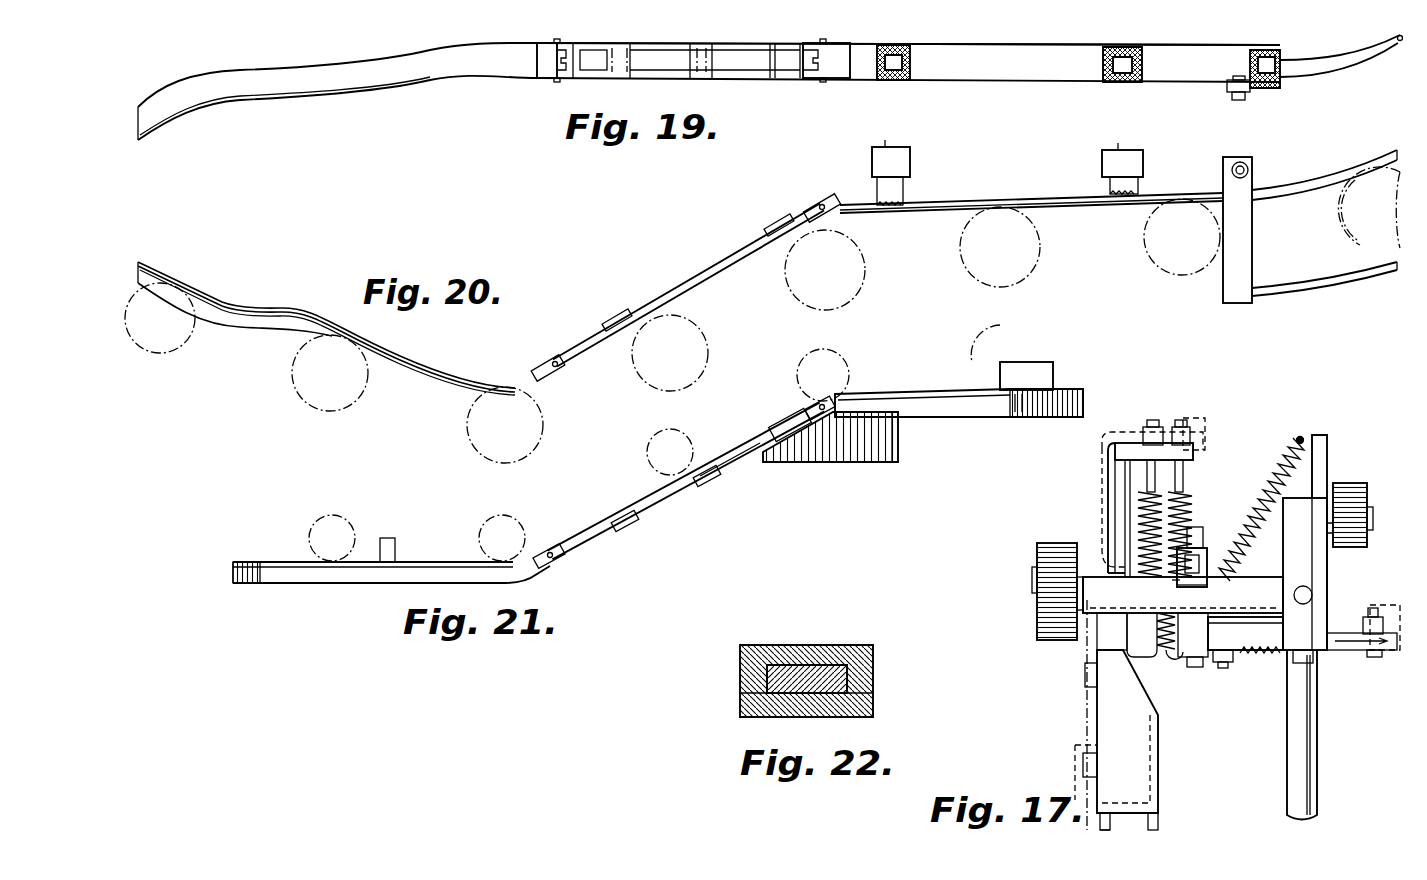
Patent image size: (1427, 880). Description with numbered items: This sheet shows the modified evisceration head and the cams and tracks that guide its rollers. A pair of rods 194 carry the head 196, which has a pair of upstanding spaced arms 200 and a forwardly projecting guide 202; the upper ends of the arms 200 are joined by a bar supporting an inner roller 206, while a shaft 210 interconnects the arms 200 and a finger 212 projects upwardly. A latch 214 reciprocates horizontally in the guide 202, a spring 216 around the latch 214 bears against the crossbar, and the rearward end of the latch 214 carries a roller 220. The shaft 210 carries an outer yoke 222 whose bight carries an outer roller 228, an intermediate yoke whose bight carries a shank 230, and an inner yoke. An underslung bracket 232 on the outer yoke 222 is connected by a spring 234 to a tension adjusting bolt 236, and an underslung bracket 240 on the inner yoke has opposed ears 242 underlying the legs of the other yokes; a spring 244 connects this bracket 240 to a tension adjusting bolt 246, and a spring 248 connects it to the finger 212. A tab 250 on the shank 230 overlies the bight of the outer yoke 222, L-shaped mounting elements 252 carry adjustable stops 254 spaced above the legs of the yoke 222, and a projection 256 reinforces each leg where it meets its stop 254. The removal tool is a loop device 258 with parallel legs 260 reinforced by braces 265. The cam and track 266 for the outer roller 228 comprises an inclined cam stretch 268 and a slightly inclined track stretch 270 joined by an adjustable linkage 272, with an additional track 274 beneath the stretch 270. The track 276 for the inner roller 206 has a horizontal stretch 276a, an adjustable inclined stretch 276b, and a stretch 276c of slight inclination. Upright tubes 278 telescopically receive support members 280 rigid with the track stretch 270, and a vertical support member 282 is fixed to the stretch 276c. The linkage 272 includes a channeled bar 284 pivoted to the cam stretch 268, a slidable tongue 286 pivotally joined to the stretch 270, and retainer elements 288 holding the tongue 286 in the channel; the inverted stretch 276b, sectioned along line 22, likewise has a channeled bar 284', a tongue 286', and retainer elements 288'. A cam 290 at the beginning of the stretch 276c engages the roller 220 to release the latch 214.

In FIG. 17, the rods 194 is at (1308, 722).
In FIG. 17, the head 196 is at (1335, 560).
In FIG. 17, the arms 200 is at (1288, 567).
In FIG. 17, the guide 202 is at (1237, 653).
In FIG. 21, the roller 206 is at (345, 515).
In FIG. 17, the roller 206 is at (1358, 500).
In FIG. 17, the shaft 210 is at (1312, 594).
In FIG. 17, the finger 212 is at (1328, 455).
In FIG. 17, the latch 214 is at (1220, 668).
In FIG. 17, the spring 216 is at (1268, 655).
In FIG. 17, the roller 220 is at (1368, 628).
In FIG. 17, the outer yoke 222 is at (1085, 640).
In FIG. 20, the roller 228 is at (466, 427).
In FIG. 17, the roller 228 is at (1042, 560).
In FIG. 17, the shank 230 is at (1110, 495).
In FIG. 17, the bracket 232 is at (1140, 672).
In FIG. 17, the spring 234 is at (1143, 487).
In FIG. 17, the tension adjusting bolt 236 is at (1149, 420).
In FIG. 17, the bracket 240 is at (1176, 662).
In FIG. 17, the ears 242 is at (1226, 632).
In FIG. 17, the spring 244 is at (1187, 497).
In FIG. 17, the tension adjusting bolt 246 is at (1186, 420).
In FIG. 17, the spring 248 is at (1293, 455).
In FIG. 17, the tab 250 is at (1070, 535).
In FIG. 17, the L-shaped mounting elements 252 is at (1177, 578).
In FIG. 17, the stops 254 is at (1205, 550).
In FIG. 17, the projection 256 is at (1205, 587).
In FIG. 17, the loop device 258 is at (1075, 774).
In FIG. 17, the legs 260 is at (1102, 826).
In FIG. 17, the braces 265 is at (1158, 818).
In FIG. 19, the cam and track 266 is at (472, 42).
In FIG. 20, the cam and track 266 is at (246, 300).
In FIG. 19, the cam stretch 268 is at (425, 79).
In FIG. 20, the cam stretch 268 is at (327, 308).
In FIG. 19, the track stretch 270 is at (1020, 54).
In FIG. 20, the track stretch 270 is at (1015, 200).
In FIG. 19, the adjustable linkage 272 is at (660, 43).
In FIG. 20, the adjustable linkage 272 is at (655, 294).
In FIG. 20, the track 274 is at (1297, 288).
In FIG. 21, the track 276 is at (422, 558).
In FIG. 21, the horizontal stretch 276a is at (280, 551).
In FIG. 21, the inclined stretch 276b is at (615, 510).
In FIG. 21, the stretch 276c is at (940, 392).
In FIG. 19, the tubes 278 is at (908, 50).
In FIG. 20, the tubes 278 is at (905, 160).
In FIG. 19, the support members 280 is at (893, 82).
In FIG. 20, the support members 280 is at (903, 193).
In FIG. 21, the support member 282 is at (1055, 370).
In FIG. 19, the bar 284 is at (637, 75).
In FIG. 20, the bar 284 is at (648, 324).
In FIG. 21, the channeled bar 284' is at (740, 471).
In FIG. 22, the channeled bar 284' is at (809, 661).
In FIG. 19, the tongue 286 is at (745, 45).
In FIG. 20, the tongue 286 is at (798, 215).
In FIG. 21, the tongue 286' is at (777, 417).
In FIG. 22, the tongue 286' is at (850, 673).
In FIG. 19, the retainer elements 288 is at (693, 75).
In FIG. 20, the retainer elements 288 is at (663, 281).
In FIG. 21, the retainer elements 288' is at (666, 514).
In FIG. 22, the retainer elements 288' is at (841, 704).
In FIG. 21, the cam 290 is at (855, 458).
In FIG. 21, the section line 22 is at (682, 443).